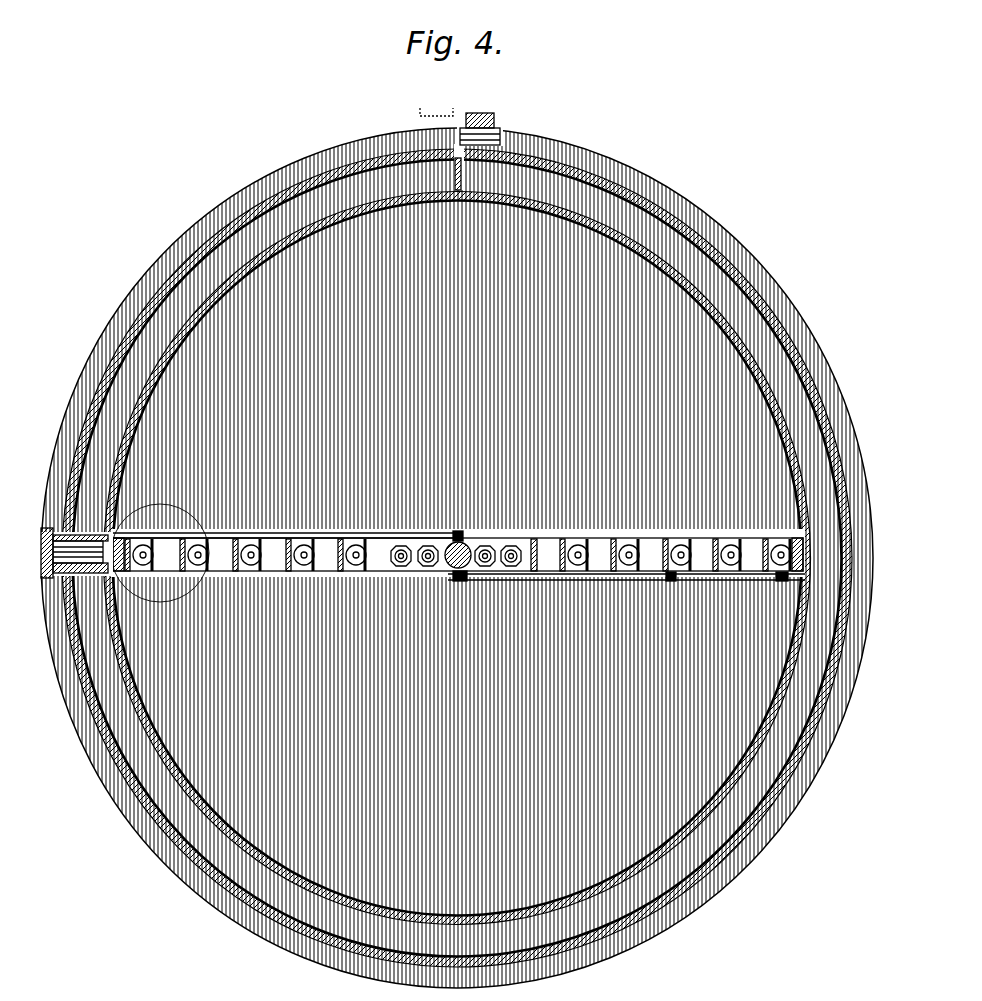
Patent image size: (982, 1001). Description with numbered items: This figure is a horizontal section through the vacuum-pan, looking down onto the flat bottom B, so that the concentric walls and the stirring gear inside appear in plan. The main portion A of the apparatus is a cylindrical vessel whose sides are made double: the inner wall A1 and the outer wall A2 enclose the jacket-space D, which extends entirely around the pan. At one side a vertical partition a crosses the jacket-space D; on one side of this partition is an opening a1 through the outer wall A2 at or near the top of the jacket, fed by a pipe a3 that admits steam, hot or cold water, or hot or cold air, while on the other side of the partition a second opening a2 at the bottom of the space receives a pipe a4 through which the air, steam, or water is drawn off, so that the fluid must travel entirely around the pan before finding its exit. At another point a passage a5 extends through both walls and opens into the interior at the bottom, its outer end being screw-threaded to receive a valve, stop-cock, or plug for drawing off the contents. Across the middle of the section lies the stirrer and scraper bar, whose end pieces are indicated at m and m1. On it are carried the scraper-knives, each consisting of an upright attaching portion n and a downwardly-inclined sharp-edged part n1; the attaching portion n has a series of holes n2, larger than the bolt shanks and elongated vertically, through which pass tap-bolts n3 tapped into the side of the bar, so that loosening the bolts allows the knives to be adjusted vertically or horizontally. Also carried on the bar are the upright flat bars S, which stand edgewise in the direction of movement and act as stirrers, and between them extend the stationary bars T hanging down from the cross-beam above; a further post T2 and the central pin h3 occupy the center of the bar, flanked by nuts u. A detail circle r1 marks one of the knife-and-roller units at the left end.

The main portion of the apparatus A is at (752, 842).
The inner wall A1 is at (160, 352).
The outer wall A2 is at (118, 350).
The bottom B is at (457, 558).
The jacket-space D is at (183, 290).
The vertical partition a is at (454, 164).
The opening a1 is at (452, 103).
The second opening a2 is at (480, 120).
The pipe a3 is at (427, 107).
The pipe a4 is at (490, 118).
The passage a5 is at (72, 566).
The upright attaching portion n is at (296, 528).
The downwardly-inclined sharp-edged part n1 is at (782, 574).
The holes n2 is at (620, 566).
The tap-bolts n3 is at (566, 567).
The bar end block m is at (120, 588).
The bar end block m1 is at (784, 530).
The stationary bars T is at (440, 565).
The upright flat bars S is at (335, 564).
The central post T2 is at (528, 531).
The central pin h3 is at (460, 538).
The lower horizontal end u is at (503, 536).
The detail circle r1 is at (134, 520).